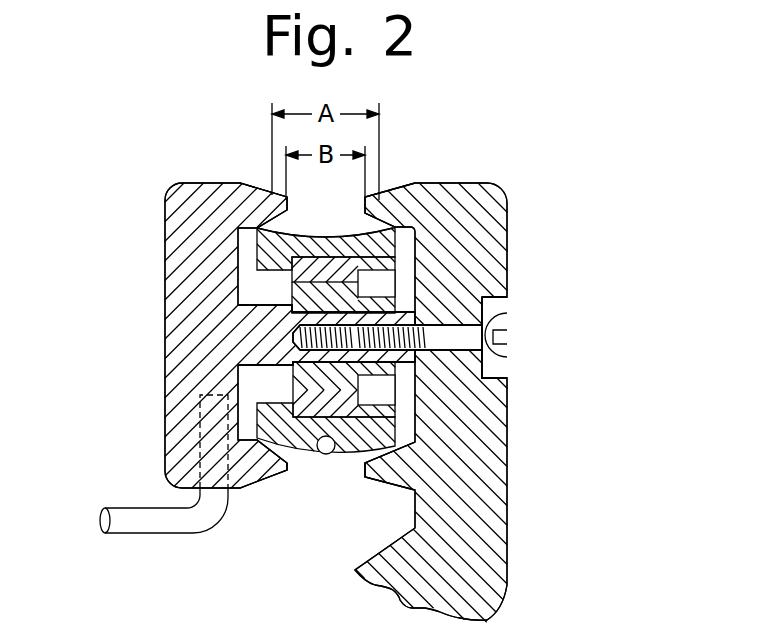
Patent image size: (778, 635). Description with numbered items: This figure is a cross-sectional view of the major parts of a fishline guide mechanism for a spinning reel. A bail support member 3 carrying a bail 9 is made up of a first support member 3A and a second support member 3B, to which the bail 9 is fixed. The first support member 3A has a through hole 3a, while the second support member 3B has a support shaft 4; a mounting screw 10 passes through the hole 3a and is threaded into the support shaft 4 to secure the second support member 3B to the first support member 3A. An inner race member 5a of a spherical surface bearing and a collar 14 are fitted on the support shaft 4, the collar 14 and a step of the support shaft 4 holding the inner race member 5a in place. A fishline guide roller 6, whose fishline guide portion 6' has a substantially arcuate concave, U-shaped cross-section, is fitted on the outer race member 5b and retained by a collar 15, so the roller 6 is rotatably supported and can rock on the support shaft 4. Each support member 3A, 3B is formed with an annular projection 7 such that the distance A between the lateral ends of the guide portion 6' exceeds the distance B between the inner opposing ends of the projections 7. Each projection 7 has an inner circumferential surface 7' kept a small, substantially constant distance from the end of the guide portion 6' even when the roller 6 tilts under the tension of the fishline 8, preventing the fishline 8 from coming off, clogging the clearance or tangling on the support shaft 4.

The bail support member 3 is at (519, 180).
The first support member 3A is at (500, 228).
The second support member 3B is at (178, 205).
The through hole 3a is at (508, 346).
The support shaft 4 is at (235, 341).
The inner race member 5a is at (305, 294).
The outer race member 5b is at (300, 271).
The fishline guide roller 6 is at (437, 258).
The fishline guide portion 6' is at (325, 211).
The annular projection 7 is at (325, 499).
The inner circumferential surface 7' is at (332, 339).
The fishline 8 is at (326, 456).
The bail 9 is at (105, 522).
The mounting screw 10 is at (508, 332).
The collar 14 is at (400, 368).
The collar 15 is at (397, 412).